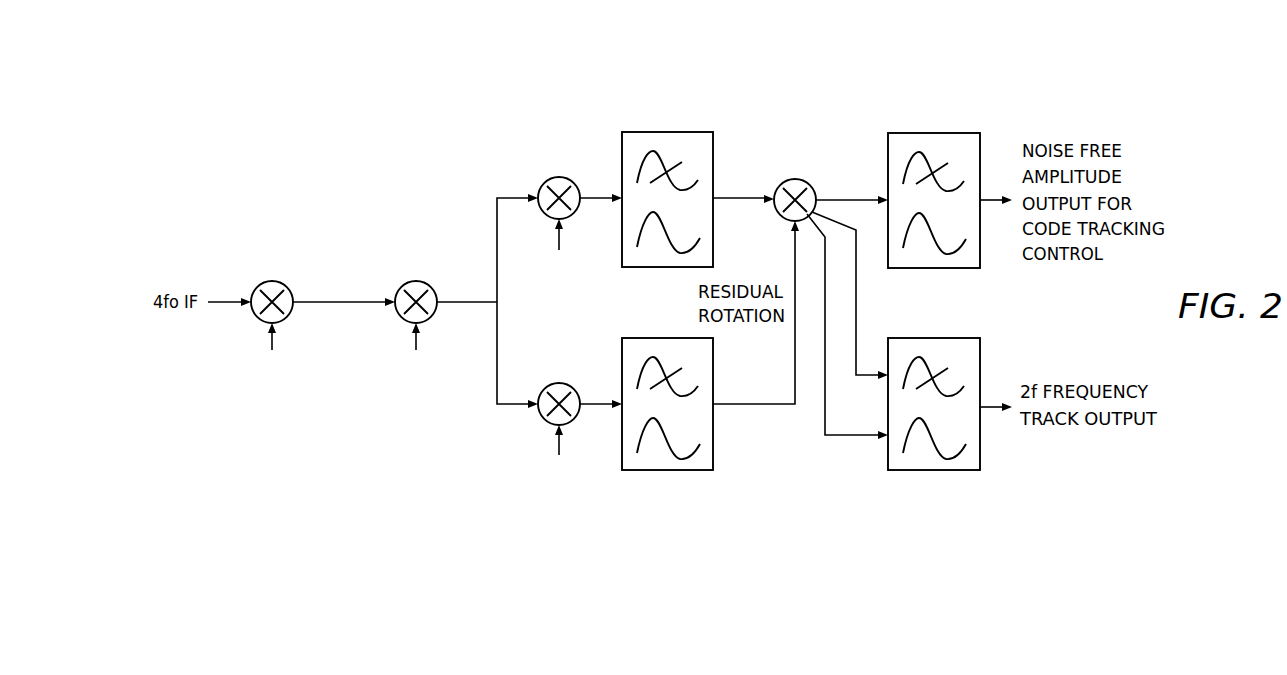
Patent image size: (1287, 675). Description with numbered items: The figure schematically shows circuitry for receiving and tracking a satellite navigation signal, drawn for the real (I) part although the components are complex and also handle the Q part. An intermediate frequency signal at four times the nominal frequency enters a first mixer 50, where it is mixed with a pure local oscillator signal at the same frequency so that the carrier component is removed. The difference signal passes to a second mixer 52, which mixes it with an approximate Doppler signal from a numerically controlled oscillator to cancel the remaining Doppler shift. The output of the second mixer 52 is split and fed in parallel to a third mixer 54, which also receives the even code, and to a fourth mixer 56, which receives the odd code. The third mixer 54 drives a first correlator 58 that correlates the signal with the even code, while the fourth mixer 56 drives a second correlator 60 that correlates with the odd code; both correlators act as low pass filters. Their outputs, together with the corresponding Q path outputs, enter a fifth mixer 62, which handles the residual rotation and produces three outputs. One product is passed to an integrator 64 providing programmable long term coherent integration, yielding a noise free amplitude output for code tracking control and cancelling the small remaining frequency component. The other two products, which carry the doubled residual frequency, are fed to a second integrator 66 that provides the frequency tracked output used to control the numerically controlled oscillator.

The first mixer 50 is at (262, 284).
The second mixer 52 is at (406, 284).
The third mixer 54 is at (546, 182).
The fourth mixer 56 is at (549, 386).
The first correlator 58 is at (667, 132).
The second correlator 60 is at (667, 472).
The fifth mixer 62 is at (805, 181).
The integrator 64 is at (935, 133).
The second integrator 66 is at (935, 472).